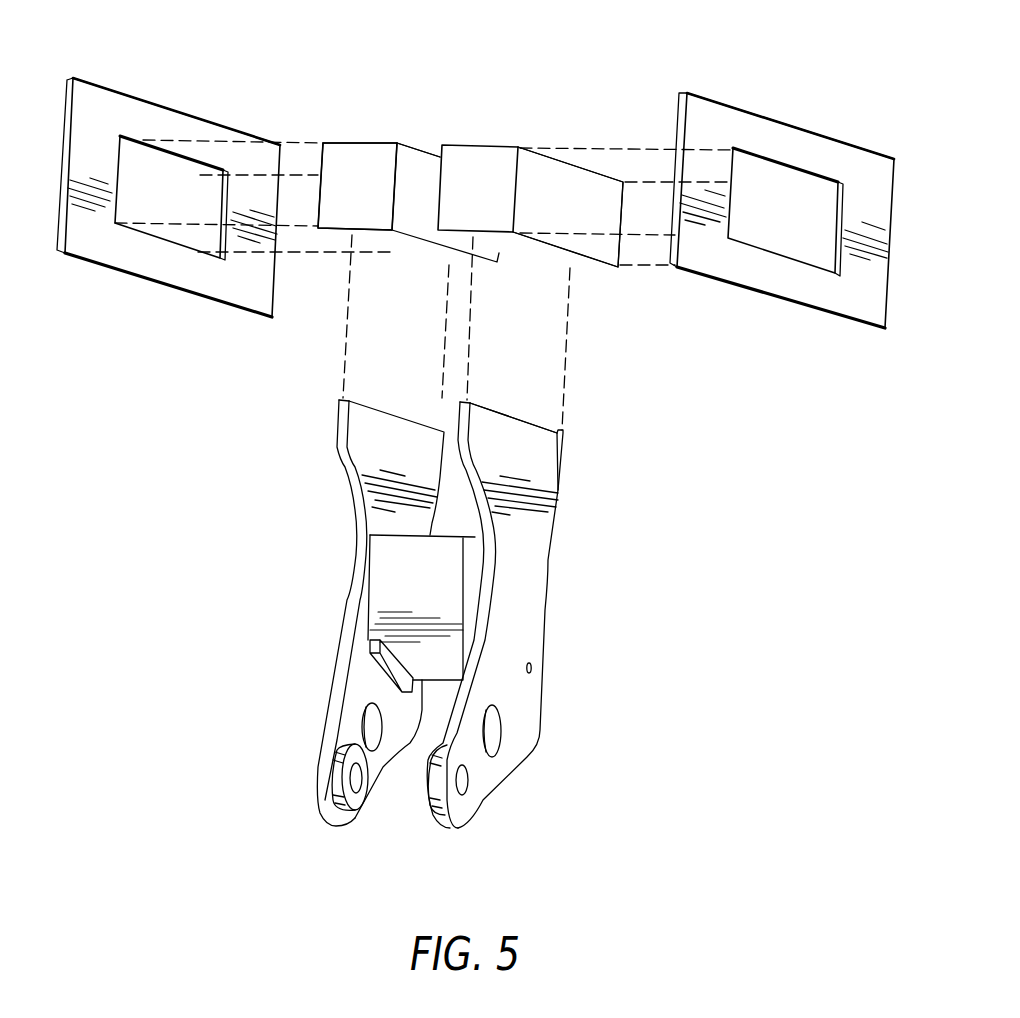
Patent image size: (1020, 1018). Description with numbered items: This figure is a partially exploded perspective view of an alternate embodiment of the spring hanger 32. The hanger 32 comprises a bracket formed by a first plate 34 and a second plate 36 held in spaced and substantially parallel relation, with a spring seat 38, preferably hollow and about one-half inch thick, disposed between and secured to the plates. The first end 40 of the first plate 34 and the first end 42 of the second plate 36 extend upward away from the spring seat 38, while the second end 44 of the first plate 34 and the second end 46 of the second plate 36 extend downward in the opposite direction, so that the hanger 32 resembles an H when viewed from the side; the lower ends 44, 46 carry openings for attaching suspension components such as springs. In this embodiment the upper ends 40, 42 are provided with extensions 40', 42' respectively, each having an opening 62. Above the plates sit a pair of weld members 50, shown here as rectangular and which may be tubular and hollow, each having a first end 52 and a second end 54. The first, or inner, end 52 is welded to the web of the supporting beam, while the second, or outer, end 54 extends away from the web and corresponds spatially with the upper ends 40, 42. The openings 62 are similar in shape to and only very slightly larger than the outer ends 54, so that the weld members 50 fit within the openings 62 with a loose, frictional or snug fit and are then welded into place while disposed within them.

The spring hanger 32 is at (655, 767).
The first plate 34 is at (356, 649).
The second plate 36 is at (543, 651).
The spring seat 38 is at (398, 575).
The first end of first plate 40 is at (341, 468).
The extension 40' is at (168, 162).
The first end of second plate 42 is at (577, 446).
The extension 42' is at (782, 179).
The second end of first plate 44 is at (323, 808).
The second end of second plate 46 is at (440, 813).
The weld member 50 is at (358, 160).
The first end of weld member 52 is at (410, 165).
The second end of weld member 54 is at (323, 160).
The opening 62 is at (158, 178).